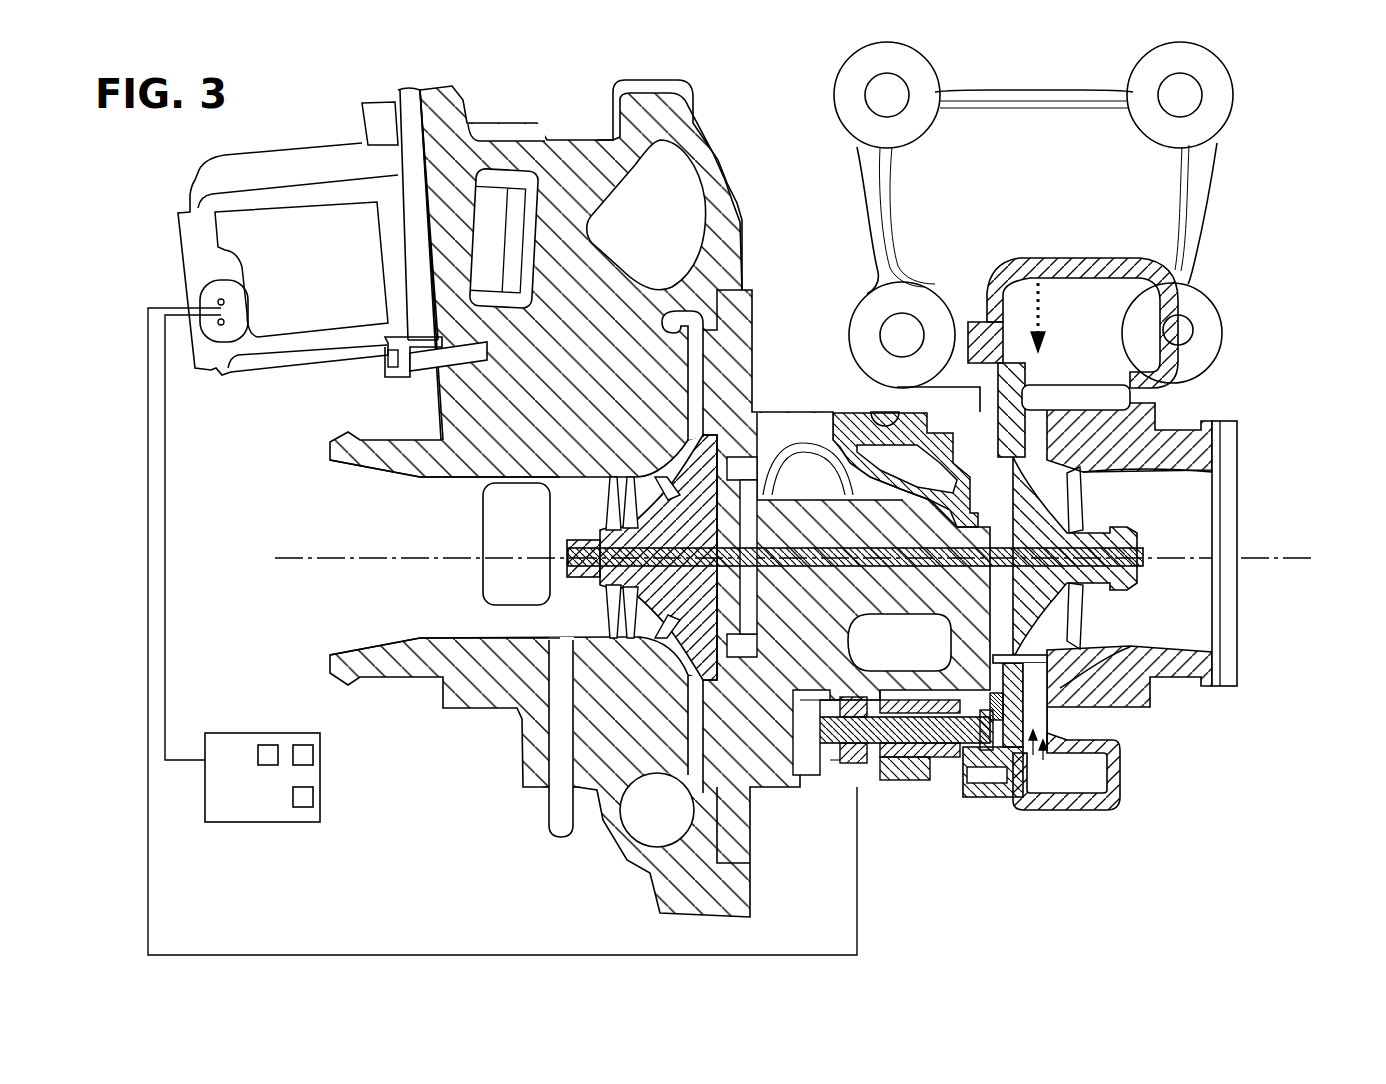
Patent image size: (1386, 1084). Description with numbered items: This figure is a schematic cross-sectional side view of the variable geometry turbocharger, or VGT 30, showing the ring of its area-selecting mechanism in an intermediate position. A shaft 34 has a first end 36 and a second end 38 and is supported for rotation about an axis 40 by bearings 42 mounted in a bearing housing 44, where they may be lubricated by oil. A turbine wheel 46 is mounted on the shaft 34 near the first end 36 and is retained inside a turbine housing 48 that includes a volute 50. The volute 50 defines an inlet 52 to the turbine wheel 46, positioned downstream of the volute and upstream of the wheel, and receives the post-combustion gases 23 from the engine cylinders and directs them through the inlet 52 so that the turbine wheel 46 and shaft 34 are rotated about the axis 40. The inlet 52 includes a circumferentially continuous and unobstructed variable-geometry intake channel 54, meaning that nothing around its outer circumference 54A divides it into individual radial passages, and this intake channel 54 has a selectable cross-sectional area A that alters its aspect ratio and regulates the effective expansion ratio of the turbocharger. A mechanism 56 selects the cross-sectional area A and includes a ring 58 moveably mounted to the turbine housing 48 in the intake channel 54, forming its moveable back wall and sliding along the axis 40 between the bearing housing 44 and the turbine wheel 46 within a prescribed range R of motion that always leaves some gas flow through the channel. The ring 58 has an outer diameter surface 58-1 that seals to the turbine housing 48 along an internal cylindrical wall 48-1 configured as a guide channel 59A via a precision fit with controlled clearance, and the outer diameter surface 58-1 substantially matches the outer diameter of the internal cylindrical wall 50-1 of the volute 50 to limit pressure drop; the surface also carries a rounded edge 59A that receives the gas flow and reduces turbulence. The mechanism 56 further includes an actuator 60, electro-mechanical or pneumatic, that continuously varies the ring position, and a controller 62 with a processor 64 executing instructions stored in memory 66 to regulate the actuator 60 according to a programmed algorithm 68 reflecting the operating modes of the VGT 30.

The post-combustion gases 23 is at (1033, 303).
The VGT 30 is at (1264, 899).
The shaft 34 is at (757, 468).
The first end 36 is at (1147, 535).
The second end 38 is at (584, 529).
The axis 40 is at (1275, 558).
The bearings 42 is at (881, 531).
The bearing housing 44 is at (843, 401).
The turbine wheel 46 is at (1203, 480).
The turbine housing 48 is at (1165, 699).
The internal cylindrical wall 48-1 is at (929, 445).
The volute 50 is at (1073, 810).
The internal cylindrical wall 50-1 is at (1163, 368).
The inlet 52 is at (1058, 357).
The variable-geometry intake channel 54 is at (1090, 308).
The outer circumference 54A is at (1043, 760).
The mechanism 56 is at (957, 753).
The ring 58 is at (1018, 682).
The outer diameter surface 58-1 is at (1000, 748).
The rounded edge 59A is at (1065, 368).
The actuator 60 is at (873, 776).
The controller 62 is at (248, 769).
The processor 64 is at (265, 745).
The memory 66 is at (303, 745).
The programmed algorithm 68 is at (303, 807).
The prescribed range of motion R is at (1027, 420).
The cross-sectional area A is at (1050, 712).